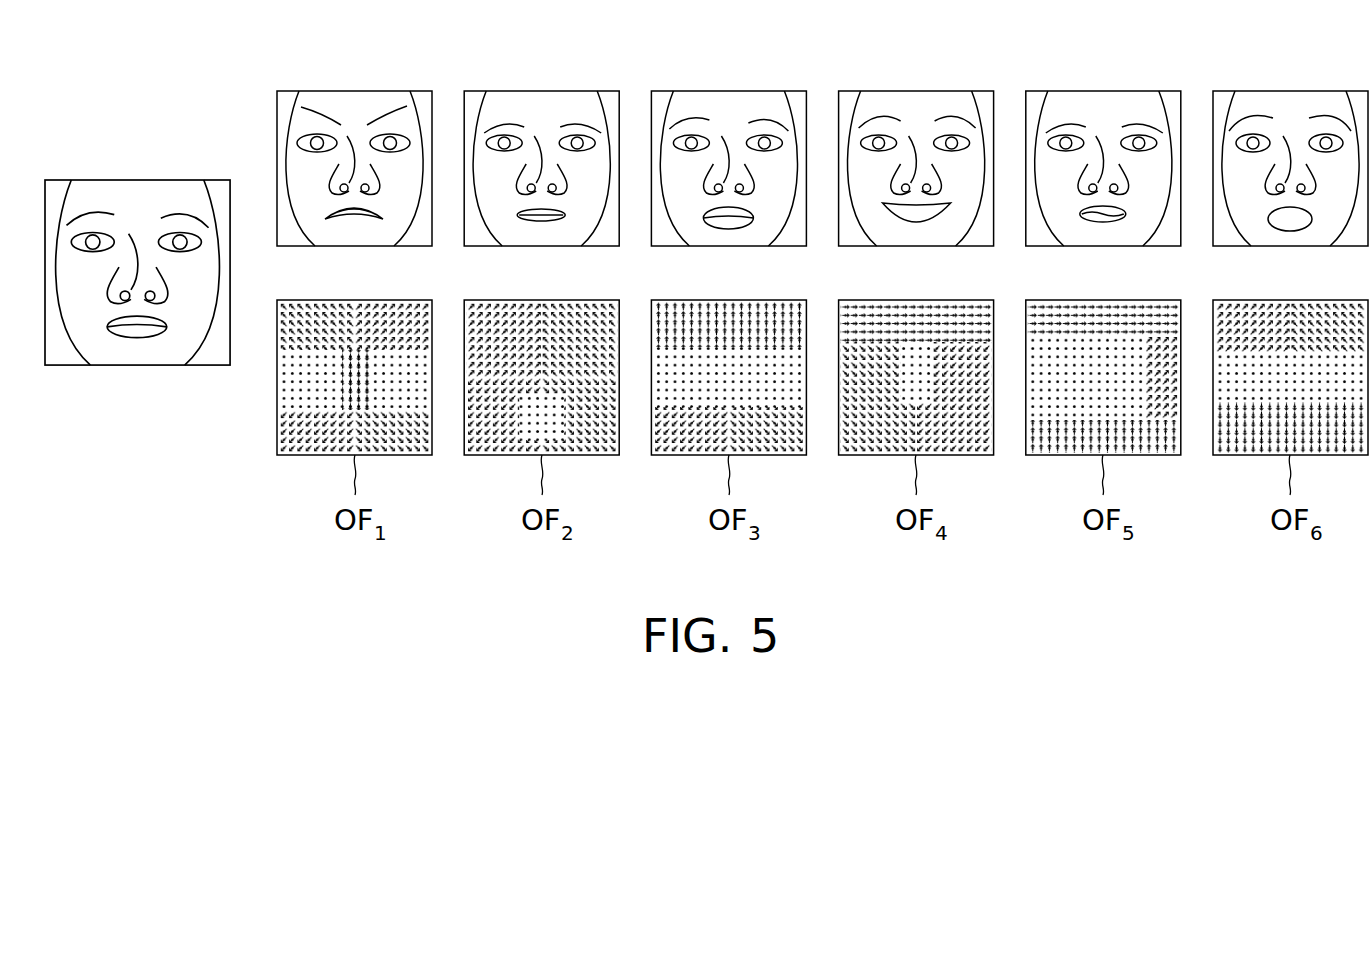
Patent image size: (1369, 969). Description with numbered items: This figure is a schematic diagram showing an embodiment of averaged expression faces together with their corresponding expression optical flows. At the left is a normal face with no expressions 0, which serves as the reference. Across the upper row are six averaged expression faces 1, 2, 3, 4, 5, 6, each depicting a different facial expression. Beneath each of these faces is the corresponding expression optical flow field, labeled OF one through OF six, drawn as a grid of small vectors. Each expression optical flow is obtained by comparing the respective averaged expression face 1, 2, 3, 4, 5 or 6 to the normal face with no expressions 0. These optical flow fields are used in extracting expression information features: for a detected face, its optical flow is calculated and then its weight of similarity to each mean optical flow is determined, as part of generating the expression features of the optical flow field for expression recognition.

The normal face with no expressions 0 is at (137, 180).
The averaged expression face 1 is at (353, 91).
The averaged expression face 2 is at (541, 91).
The averaged expression face 3 is at (728, 91).
The averaged expression face 4 is at (915, 91).
The averaged expression face 5 is at (1102, 91).
The averaged expression face 6 is at (1289, 91).